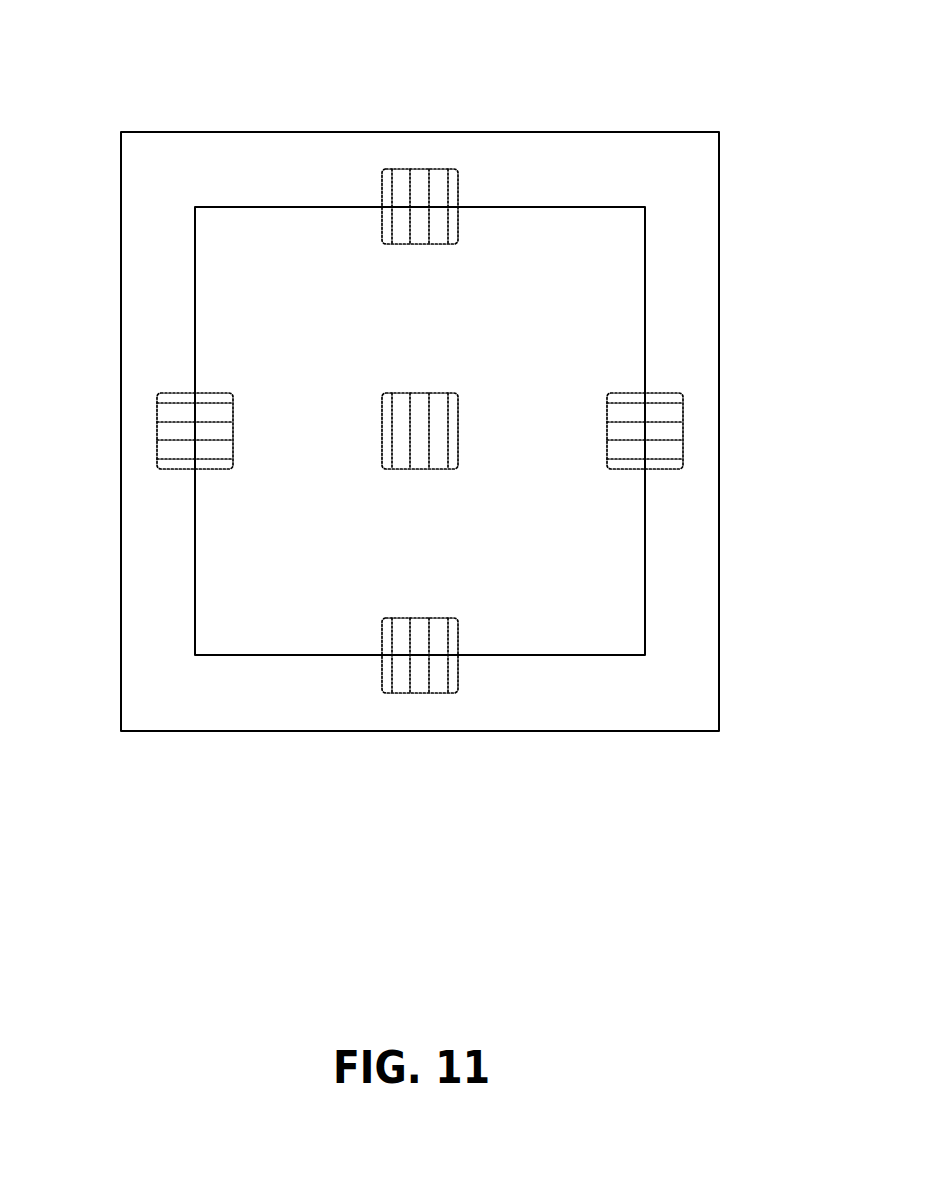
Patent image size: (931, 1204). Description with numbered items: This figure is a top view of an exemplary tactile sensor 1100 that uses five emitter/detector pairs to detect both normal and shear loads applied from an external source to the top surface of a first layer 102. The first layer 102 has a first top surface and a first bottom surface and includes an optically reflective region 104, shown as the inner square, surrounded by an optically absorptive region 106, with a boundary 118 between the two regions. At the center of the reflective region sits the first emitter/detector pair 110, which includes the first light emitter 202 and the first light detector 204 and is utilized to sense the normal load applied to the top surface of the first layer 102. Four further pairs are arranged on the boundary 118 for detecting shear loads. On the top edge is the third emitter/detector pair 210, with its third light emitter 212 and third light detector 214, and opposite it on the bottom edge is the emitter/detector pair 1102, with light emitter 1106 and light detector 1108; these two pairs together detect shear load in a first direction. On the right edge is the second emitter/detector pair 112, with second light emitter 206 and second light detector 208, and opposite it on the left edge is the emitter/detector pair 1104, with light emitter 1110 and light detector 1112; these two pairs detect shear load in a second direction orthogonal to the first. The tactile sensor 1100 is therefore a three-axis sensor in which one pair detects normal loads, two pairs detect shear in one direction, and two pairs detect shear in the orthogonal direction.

The tactile sensor 1100 is at (650, 52).
The first layer 102 is at (232, 132).
The optically absorptive region 106 is at (702, 208).
The boundary 118 is at (645, 291).
The optically reflective region 104 is at (607, 338).
The third emitter/detector pair 210 is at (418, 170).
The third light emitter 212 is at (402, 178).
The third light detector 214 is at (438, 178).
The emitter/detector pair 1104 is at (158, 433).
The light emitter 1110 is at (167, 412).
The light detector 1112 is at (167, 448).
The second emitter/detector pair 112 is at (681, 435).
The second light emitter 206 is at (672, 413).
The second light detector 208 is at (672, 449).
The first light emitter 202 is at (402, 456).
The first emitter/detector pair 110 is at (428, 463).
The first light detector 204 is at (438, 462).
The emitter/detector pair 1102 is at (420, 695).
The light emitter 1106 is at (402, 687).
The light detector 1108 is at (437, 687).